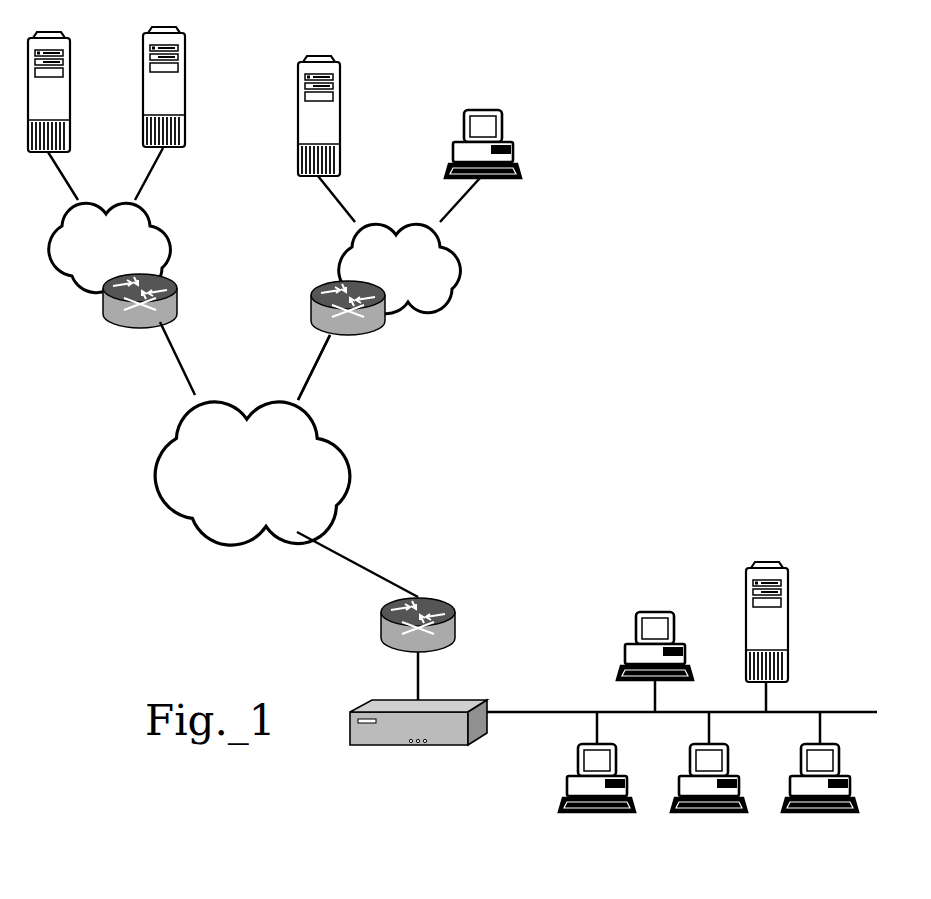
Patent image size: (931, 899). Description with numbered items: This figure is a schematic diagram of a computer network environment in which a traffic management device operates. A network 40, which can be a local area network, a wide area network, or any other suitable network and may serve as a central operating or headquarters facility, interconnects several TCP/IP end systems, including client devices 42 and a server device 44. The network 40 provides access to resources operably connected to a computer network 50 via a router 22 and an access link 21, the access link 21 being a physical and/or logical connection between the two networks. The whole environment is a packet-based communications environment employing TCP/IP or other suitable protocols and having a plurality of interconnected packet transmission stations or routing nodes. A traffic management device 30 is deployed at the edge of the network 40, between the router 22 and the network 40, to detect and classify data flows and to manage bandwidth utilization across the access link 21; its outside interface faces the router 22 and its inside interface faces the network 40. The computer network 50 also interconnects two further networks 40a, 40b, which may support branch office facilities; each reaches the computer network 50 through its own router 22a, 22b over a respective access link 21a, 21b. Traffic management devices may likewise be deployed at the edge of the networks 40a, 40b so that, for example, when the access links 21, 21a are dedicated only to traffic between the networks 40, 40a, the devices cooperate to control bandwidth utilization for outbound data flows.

The network 40a is at (172, 240).
The router 22a is at (178, 298).
The network 40b is at (460, 262).
The router 22b is at (365, 335).
The access link 21a is at (175, 362).
The access link 21b is at (316, 368).
The computer network 50 is at (192, 538).
The access link 21 is at (340, 540).
The router 22 is at (458, 622).
The traffic management device 30 is at (450, 747).
The network 40 is at (877, 712).
The client devices 42 is at (655, 612).
The server device 44 is at (774, 563).